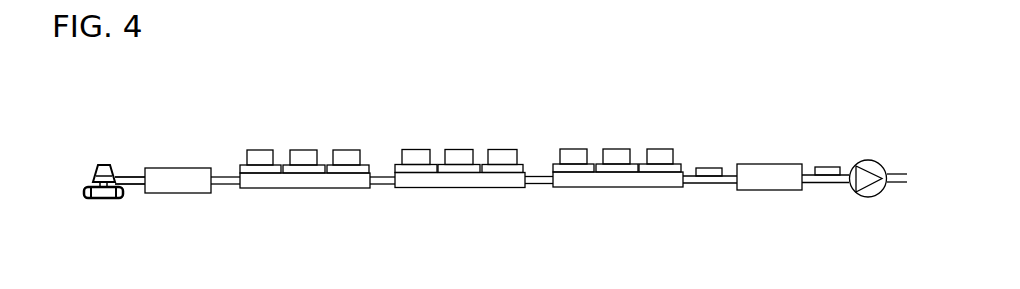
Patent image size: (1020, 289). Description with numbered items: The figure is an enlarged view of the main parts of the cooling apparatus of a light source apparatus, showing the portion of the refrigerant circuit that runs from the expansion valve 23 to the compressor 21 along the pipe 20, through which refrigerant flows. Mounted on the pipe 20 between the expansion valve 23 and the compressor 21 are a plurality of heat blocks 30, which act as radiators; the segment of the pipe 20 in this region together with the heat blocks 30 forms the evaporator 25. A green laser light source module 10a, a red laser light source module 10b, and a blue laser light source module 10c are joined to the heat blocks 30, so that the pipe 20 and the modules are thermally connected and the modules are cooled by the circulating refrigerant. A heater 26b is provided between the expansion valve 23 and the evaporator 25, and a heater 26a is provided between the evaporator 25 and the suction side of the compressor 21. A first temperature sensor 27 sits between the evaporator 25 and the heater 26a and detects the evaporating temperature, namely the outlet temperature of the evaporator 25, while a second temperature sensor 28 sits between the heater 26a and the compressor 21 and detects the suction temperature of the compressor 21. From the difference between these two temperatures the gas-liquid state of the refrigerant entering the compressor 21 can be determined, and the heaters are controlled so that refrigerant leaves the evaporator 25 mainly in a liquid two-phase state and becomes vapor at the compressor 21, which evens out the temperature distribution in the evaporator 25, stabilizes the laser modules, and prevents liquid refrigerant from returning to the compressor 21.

The green laser light source module 10a is at (368, 150).
The red laser light source module 10b is at (523, 150).
The blue laser light source module 10c is at (682, 150).
The heat block 30 is at (460, 140).
The evaporator 25 is at (457, 173).
The pipe 20 is at (133, 146).
The compressor 21 is at (873, 144).
The expansion valve 23 is at (105, 149).
The heater 26a is at (769, 211).
The heater 26b is at (178, 214).
The first temperature sensor 27 is at (715, 136).
The second temperature sensor 28 is at (834, 135).